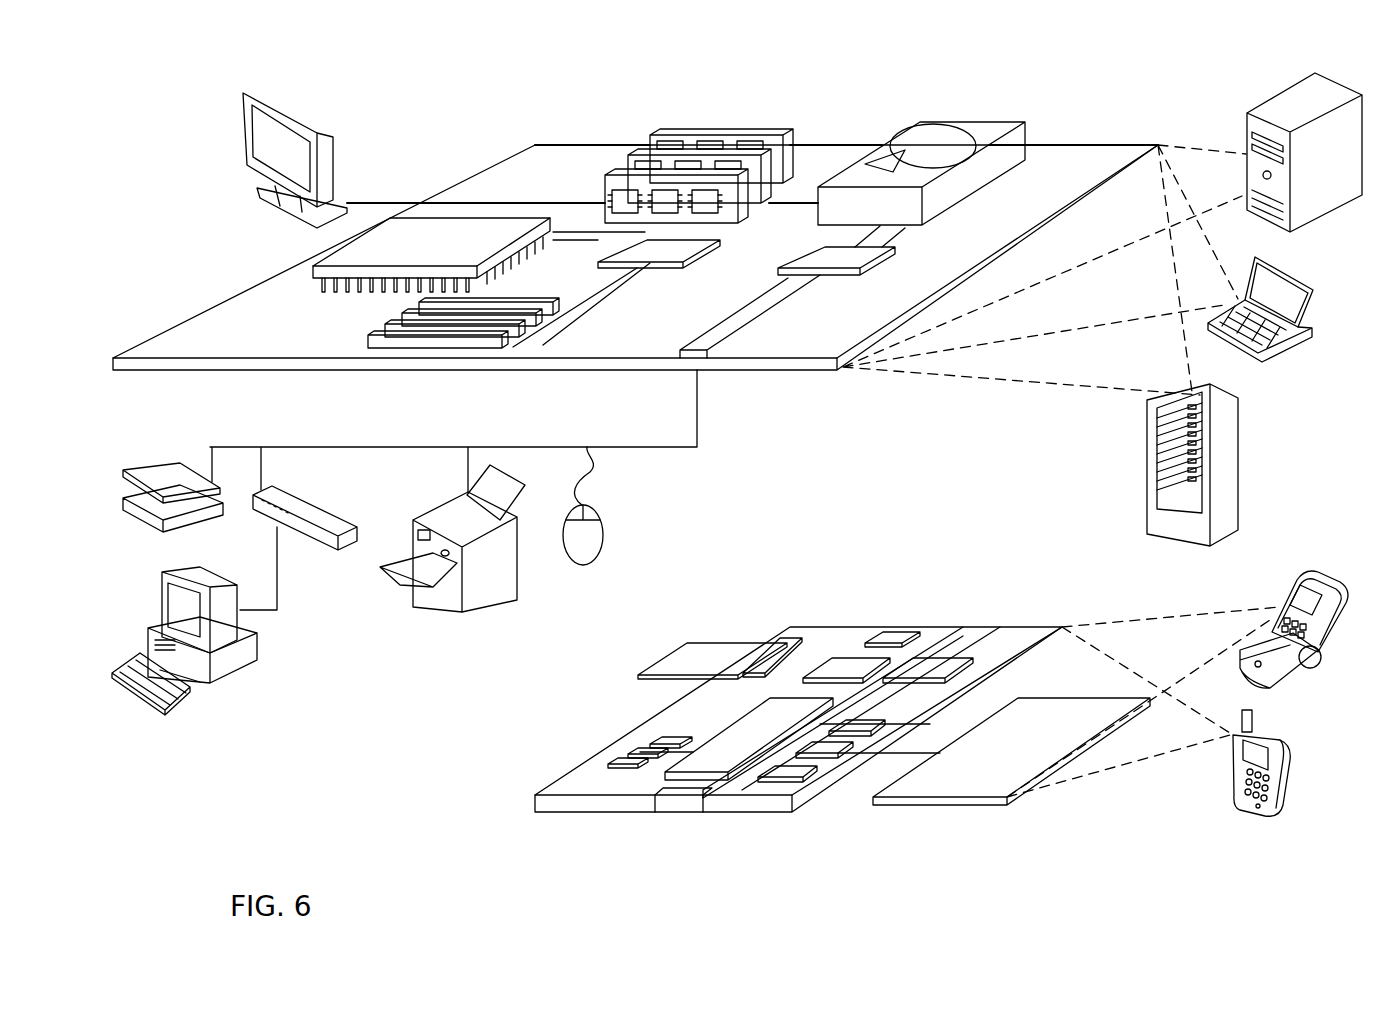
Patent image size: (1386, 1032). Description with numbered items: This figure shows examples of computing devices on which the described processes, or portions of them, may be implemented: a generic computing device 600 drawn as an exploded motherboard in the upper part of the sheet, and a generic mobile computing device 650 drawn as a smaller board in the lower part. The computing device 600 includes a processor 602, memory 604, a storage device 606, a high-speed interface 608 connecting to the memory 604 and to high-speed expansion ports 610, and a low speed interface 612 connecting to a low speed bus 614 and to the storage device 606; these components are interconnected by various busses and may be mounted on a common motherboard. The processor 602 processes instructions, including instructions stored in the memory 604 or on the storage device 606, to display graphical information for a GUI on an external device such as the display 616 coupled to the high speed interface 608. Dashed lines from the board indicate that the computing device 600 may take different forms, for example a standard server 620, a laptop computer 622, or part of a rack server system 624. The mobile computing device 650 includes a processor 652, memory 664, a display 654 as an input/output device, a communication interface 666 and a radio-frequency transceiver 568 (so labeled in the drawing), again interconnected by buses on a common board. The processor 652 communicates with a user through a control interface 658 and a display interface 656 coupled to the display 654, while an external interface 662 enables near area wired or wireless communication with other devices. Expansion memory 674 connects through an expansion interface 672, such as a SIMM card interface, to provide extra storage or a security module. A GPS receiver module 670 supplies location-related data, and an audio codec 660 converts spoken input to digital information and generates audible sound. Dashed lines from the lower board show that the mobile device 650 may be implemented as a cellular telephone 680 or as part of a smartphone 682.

The computing device 600 is at (446, 115).
The processor 602 is at (313, 270).
The memory 604 is at (660, 140).
The storage device 606 is at (916, 135).
The high-speed interface 608 is at (618, 242).
The high-speed expansion ports 610 is at (397, 330).
The low speed interface 612 is at (818, 255).
The low speed bus 614 is at (703, 360).
The display 616 is at (244, 92).
The standard server 620 is at (1246, 130).
The laptop computer 622 is at (1312, 283).
The rack server system 624 is at (1142, 491).
The mobile computing device 650 is at (512, 805).
The processor 652 is at (720, 775).
The display 654 is at (972, 783).
The display interface 656 is at (795, 780).
The control interface 658 is at (825, 757).
The audio codec 660 is at (857, 733).
The external interface 662 is at (683, 792).
The memory 664 is at (634, 756).
The communication interface 666 is at (850, 670).
The memory chip 568 is at (927, 668).
The GPS receiver module 670 is at (903, 632).
The expansion interface 672 is at (777, 642).
The expansion memory 674 is at (773, 641).
The cellular telephone 680 is at (1295, 580).
The smartphone 682 is at (1240, 772).